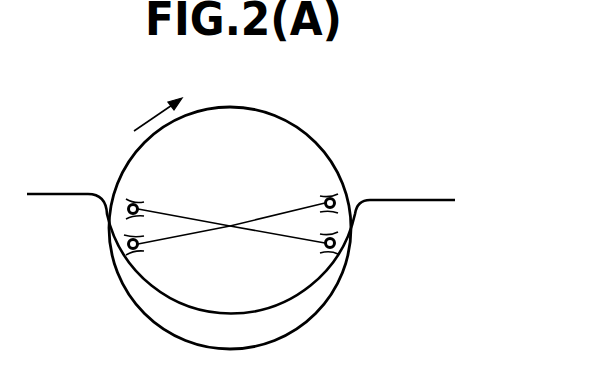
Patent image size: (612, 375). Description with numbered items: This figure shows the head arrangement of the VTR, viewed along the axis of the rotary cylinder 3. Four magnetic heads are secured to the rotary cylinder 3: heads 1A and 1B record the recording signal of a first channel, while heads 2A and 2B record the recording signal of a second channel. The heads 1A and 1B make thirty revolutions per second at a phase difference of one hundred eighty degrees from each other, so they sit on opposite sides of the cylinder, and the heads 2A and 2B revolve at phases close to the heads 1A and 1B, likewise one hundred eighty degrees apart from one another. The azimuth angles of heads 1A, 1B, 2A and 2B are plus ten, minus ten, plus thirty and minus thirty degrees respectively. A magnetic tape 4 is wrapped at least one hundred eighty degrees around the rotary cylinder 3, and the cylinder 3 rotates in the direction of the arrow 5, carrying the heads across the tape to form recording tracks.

The head 1A is at (140, 202).
The head 1B is at (325, 256).
The head 2A is at (138, 257).
The head 2B is at (324, 196).
The rotary cylinder 3 is at (304, 128).
The magnetic tape 4 is at (416, 201).
The arrow 5 is at (145, 120).